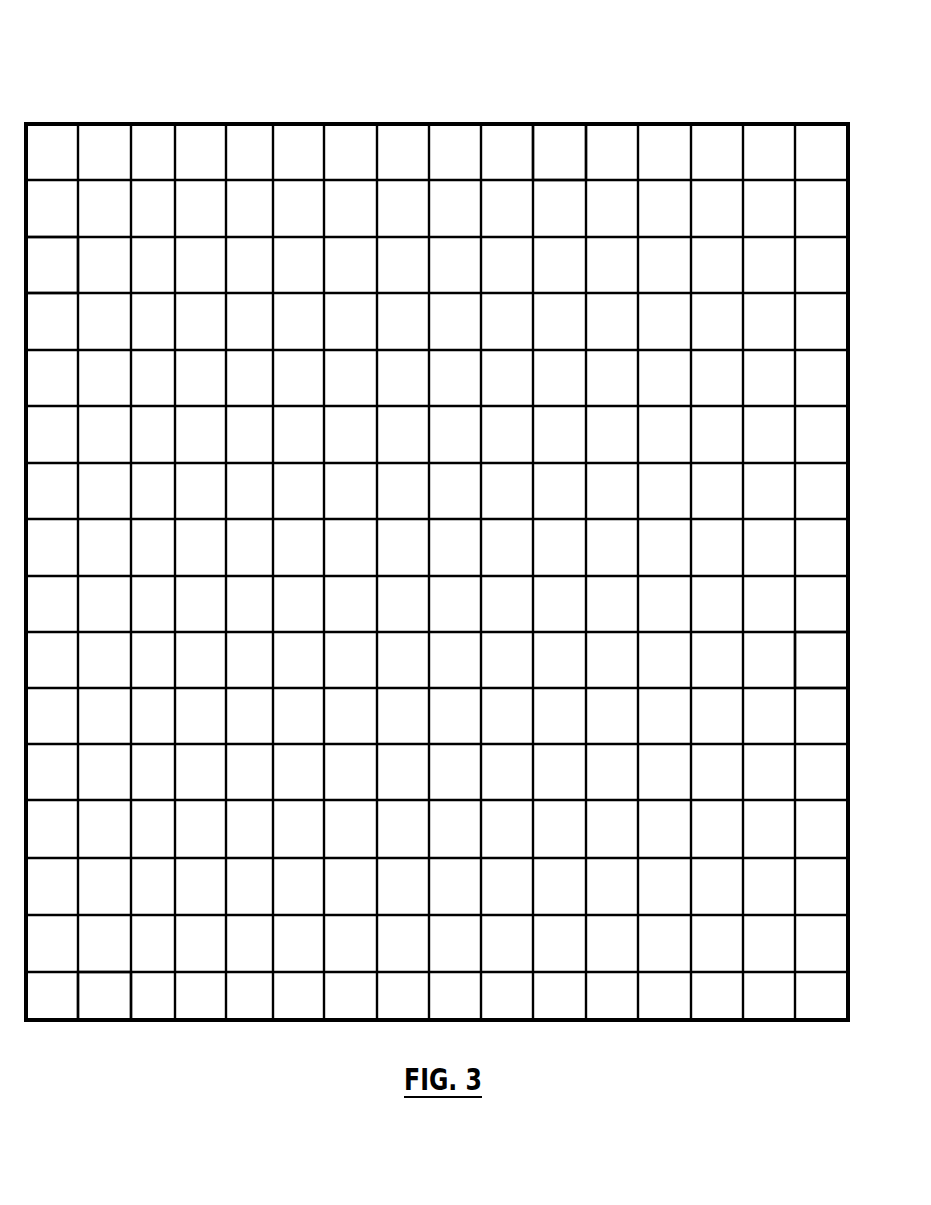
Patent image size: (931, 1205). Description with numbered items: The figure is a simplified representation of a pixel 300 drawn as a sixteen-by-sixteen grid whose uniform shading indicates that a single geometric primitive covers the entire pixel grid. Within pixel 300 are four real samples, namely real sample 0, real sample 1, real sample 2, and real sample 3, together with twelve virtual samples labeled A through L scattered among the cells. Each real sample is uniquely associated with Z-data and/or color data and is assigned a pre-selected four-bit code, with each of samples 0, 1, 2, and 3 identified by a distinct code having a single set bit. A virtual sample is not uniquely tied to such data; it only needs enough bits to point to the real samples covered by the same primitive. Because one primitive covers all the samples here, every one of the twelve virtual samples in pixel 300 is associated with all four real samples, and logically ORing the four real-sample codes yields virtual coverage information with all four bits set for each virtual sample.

The pixel 300 is at (157, 98).
The real sample 0 is at (52, 265).
The real sample 1 is at (104, 996).
The real sample 2 is at (559, 152).
The real sample 3 is at (821, 660).